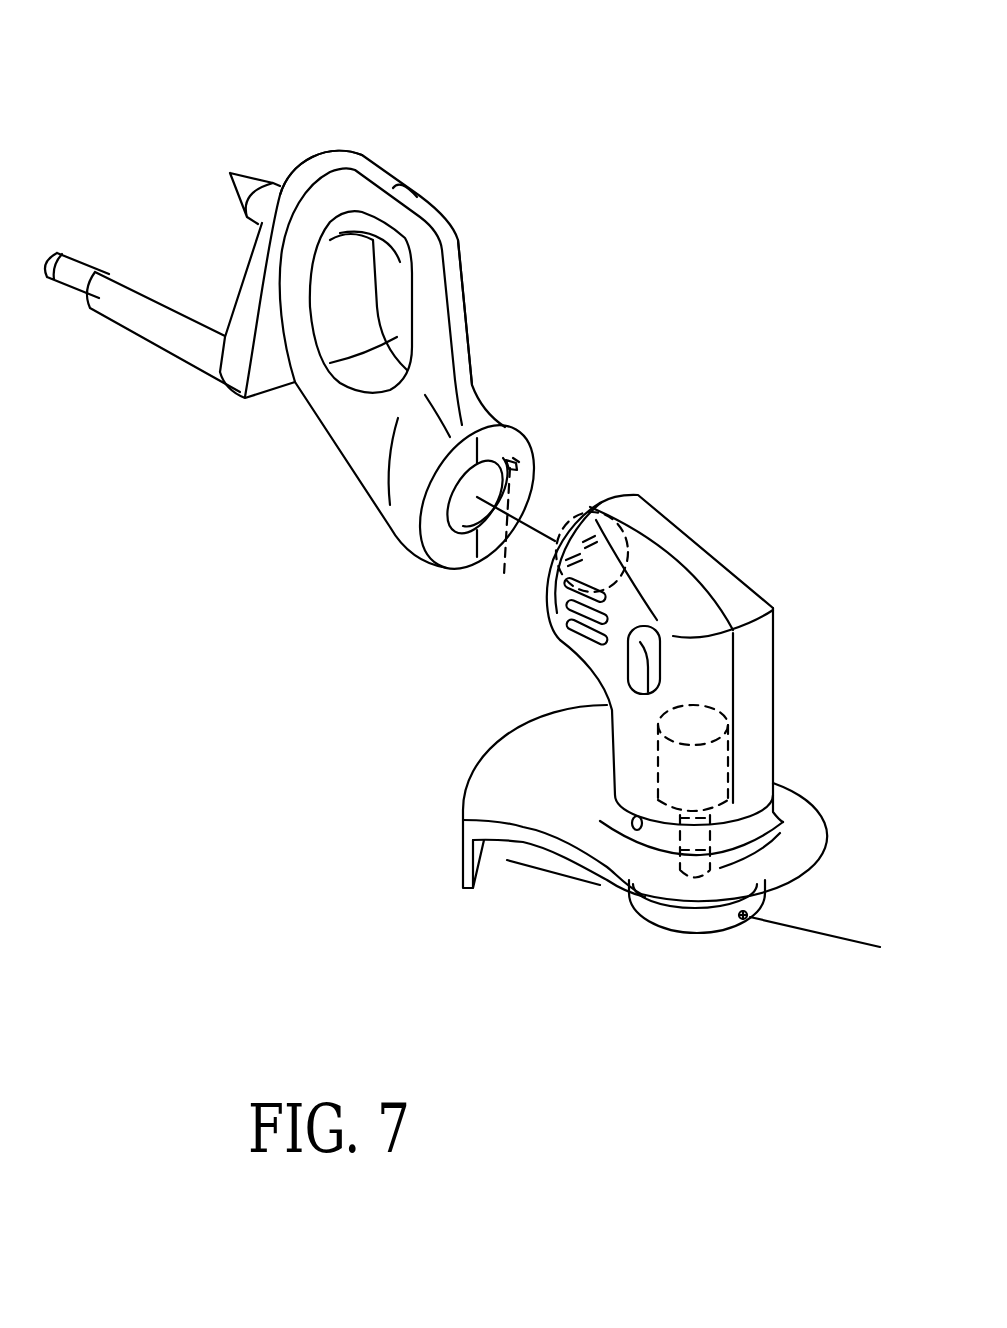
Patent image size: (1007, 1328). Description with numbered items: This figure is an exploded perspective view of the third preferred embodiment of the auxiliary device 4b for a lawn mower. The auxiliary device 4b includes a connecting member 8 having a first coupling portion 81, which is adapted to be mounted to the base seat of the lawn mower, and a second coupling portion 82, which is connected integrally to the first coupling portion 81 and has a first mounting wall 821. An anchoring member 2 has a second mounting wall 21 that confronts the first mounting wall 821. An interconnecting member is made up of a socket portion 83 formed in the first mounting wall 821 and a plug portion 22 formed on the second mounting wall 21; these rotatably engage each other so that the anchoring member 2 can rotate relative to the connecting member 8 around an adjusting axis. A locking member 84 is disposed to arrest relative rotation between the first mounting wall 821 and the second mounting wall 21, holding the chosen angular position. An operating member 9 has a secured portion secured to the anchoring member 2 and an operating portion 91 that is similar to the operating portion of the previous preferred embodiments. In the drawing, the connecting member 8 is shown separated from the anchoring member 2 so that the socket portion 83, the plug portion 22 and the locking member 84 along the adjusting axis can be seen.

The auxiliary device 4b is at (606, 142).
The connecting member 8 is at (460, 272).
The first coupling portion 81 is at (318, 148).
The second coupling portion 82 is at (458, 360).
The socket portion 83 is at (503, 428).
The first mounting wall 821 is at (433, 515).
The locking member 84 is at (513, 544).
The anchoring member 2 is at (715, 547).
The second mounting wall 21 is at (572, 512).
The plug portion 22 is at (608, 492).
The operating member 9 is at (776, 690).
The operating portion 91 is at (755, 790).